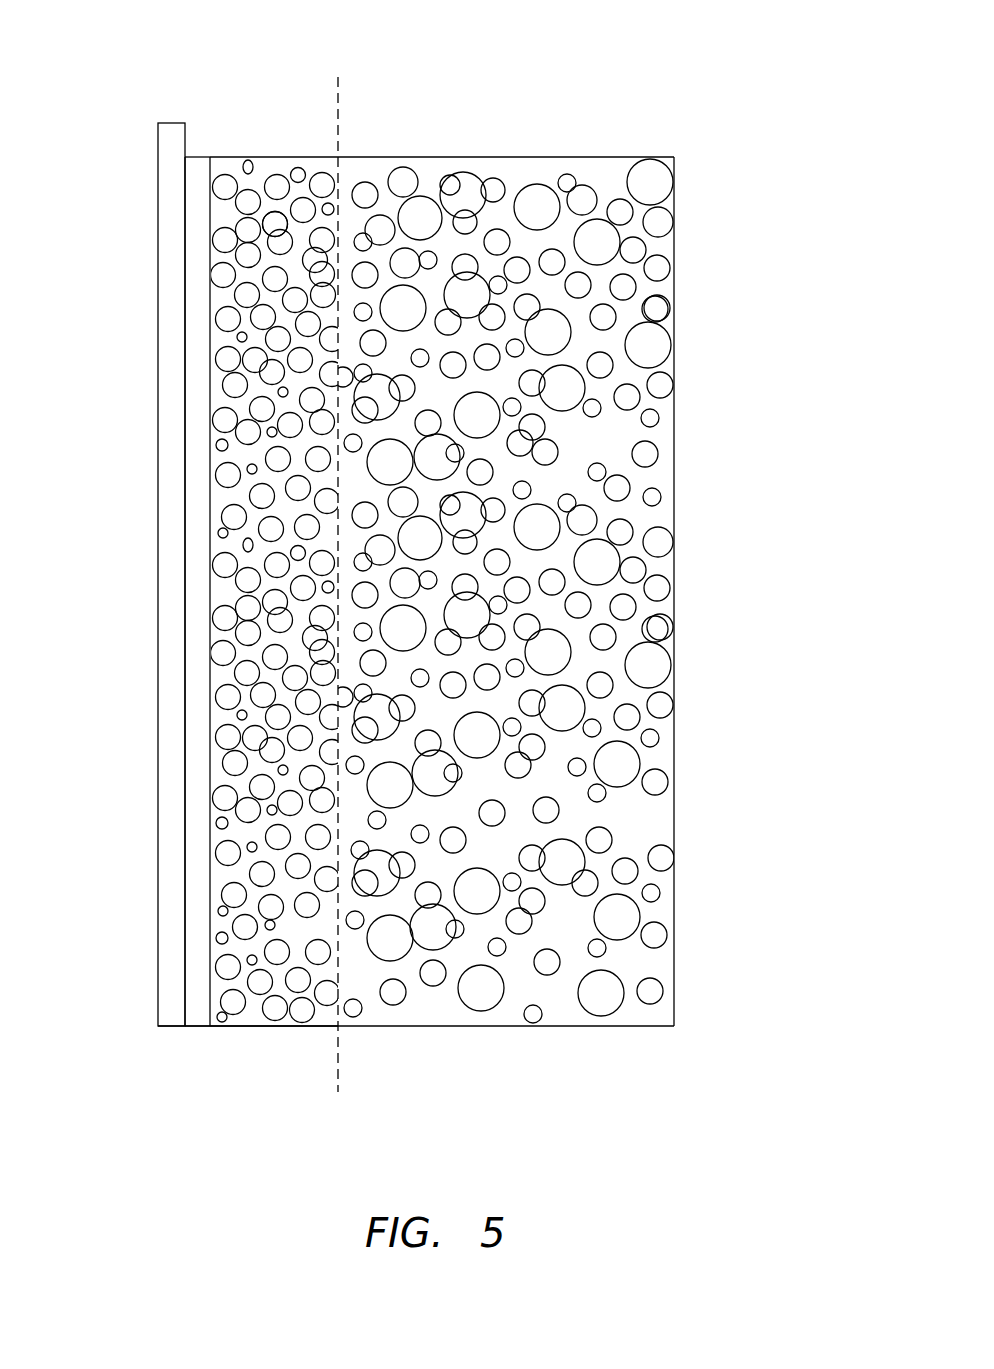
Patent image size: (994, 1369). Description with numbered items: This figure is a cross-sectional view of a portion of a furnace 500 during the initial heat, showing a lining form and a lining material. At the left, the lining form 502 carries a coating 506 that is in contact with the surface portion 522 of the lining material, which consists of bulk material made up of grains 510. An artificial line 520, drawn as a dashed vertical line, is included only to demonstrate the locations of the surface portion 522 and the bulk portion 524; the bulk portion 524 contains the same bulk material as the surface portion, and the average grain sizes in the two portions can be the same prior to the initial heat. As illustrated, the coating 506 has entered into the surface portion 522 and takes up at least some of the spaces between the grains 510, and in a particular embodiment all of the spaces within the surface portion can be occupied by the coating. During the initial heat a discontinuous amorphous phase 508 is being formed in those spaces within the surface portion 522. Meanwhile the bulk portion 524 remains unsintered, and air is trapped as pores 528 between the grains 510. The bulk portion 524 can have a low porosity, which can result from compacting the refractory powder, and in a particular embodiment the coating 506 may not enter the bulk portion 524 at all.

The furnace 500 is at (518, 33).
The lining form 502 is at (167, 268).
The coating 506 is at (195, 323).
The discontinuous amorphous phase 508 is at (227, 498).
The grains 510 is at (265, 220).
The artificial line 520 is at (340, 118).
The surface portion 522 is at (211, 551).
The bulk portion 524 is at (468, 632).
The pores 528 is at (630, 487).